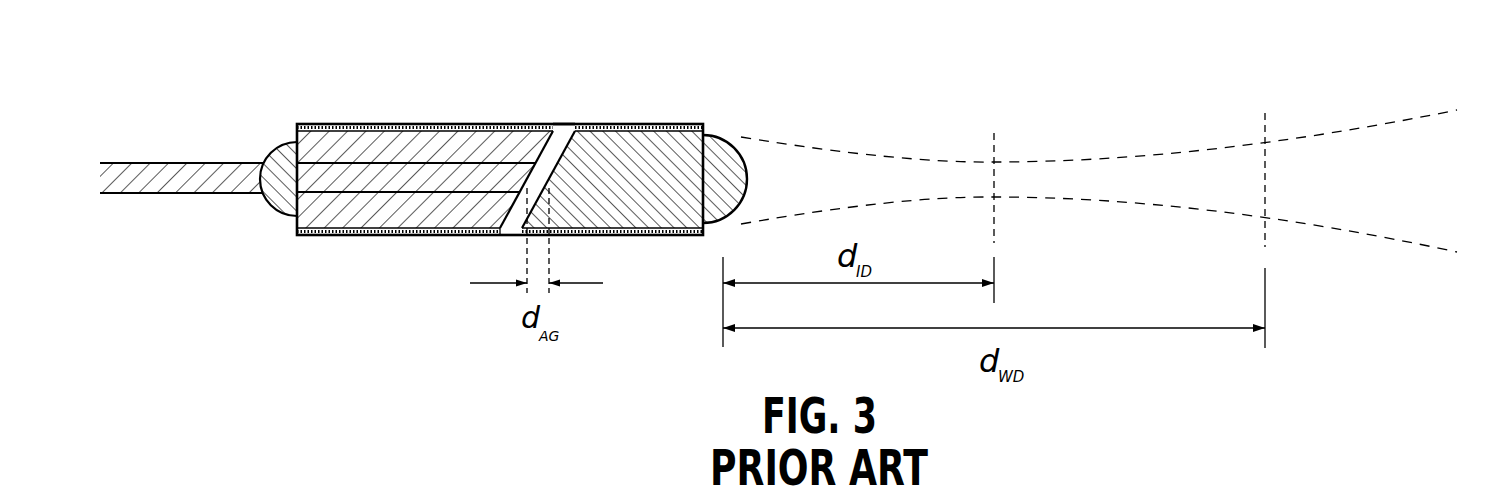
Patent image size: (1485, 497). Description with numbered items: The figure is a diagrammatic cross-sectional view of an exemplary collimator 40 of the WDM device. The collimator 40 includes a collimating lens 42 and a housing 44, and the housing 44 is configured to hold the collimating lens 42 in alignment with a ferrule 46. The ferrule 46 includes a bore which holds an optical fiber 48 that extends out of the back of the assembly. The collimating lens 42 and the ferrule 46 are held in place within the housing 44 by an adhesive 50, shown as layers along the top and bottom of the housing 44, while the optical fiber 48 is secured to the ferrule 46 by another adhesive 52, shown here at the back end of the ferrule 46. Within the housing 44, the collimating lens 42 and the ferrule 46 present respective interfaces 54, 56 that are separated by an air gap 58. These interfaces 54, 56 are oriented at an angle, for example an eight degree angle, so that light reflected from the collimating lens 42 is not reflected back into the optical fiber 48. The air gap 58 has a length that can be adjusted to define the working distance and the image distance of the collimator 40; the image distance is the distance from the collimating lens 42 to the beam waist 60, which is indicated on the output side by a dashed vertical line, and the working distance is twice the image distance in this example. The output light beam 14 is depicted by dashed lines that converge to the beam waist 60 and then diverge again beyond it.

The light beam 14 is at (1430, 111).
The collimator 40 is at (606, 39).
The collimating lens 42 is at (716, 134).
The housing 44 is at (599, 124).
The ferrule 46 is at (375, 133).
The optical fiber 48 is at (153, 194).
The adhesive 50 is at (436, 124).
The adhesive 52 is at (276, 211).
The interface 54 is at (554, 155).
The interface 56 is at (502, 228).
The air gap 58 is at (558, 124).
The beam waist 60 is at (996, 140).